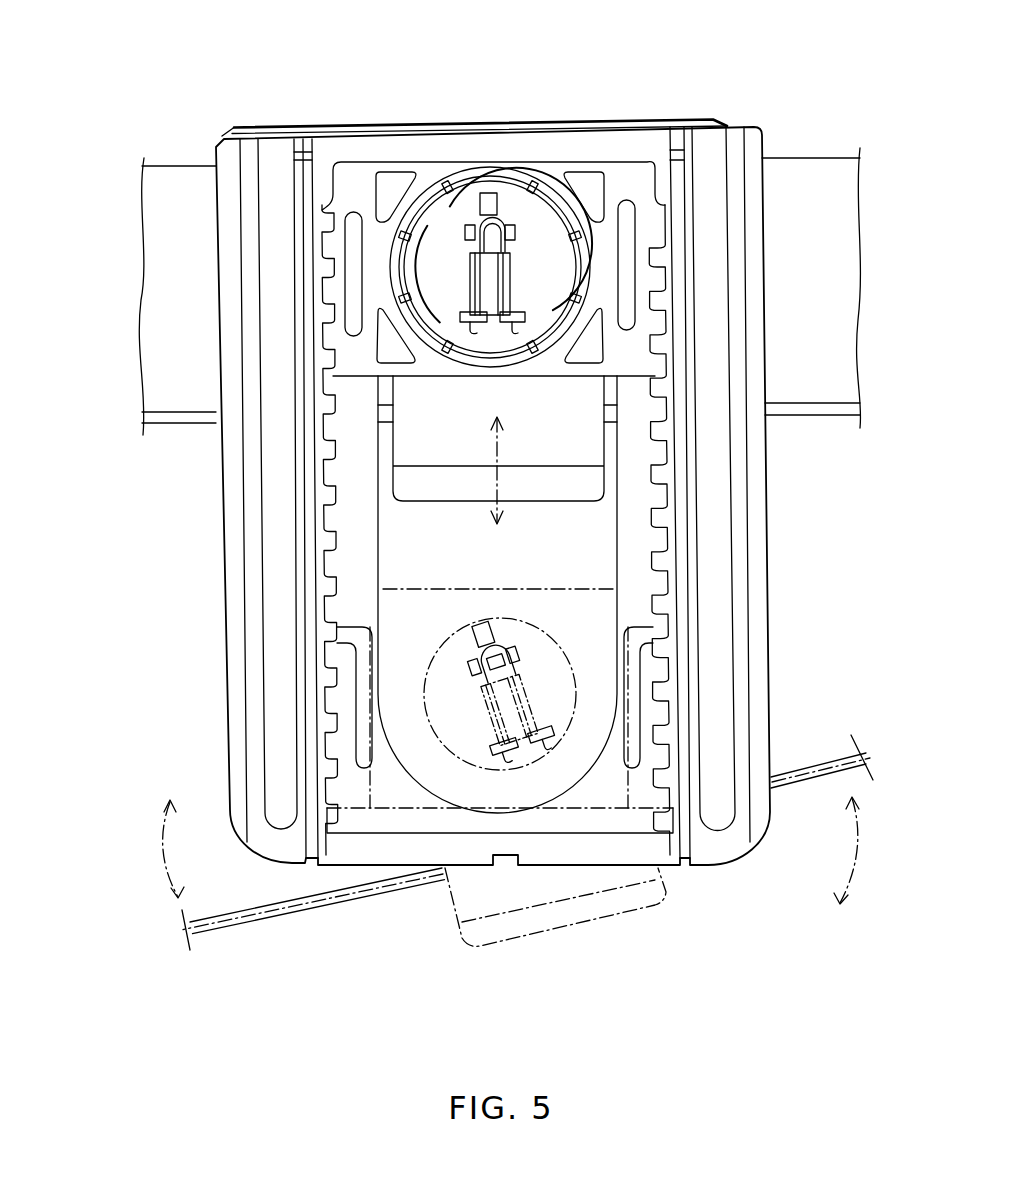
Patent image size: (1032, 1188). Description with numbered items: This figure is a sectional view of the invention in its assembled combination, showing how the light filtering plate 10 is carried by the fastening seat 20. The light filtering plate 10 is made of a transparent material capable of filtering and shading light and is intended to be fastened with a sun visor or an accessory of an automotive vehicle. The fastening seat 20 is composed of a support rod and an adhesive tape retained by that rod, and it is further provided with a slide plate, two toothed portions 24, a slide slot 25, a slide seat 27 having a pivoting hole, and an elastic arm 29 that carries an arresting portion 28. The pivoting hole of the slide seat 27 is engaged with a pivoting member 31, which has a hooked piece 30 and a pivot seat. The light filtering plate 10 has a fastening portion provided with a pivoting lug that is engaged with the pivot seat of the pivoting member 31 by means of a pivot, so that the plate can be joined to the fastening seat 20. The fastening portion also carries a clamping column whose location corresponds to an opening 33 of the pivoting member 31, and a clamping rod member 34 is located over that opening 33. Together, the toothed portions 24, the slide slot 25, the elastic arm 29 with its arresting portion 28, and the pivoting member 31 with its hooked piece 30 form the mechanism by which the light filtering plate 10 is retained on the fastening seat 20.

The light filtering plate 10 is at (838, 414).
The fastening seat 20 is at (760, 134).
The toothed portions 24 is at (660, 568).
The slide slot 25 is at (372, 560).
The slide seat 27 is at (361, 172).
The arresting portion 28 is at (338, 222).
The elastic arm 29 is at (342, 306).
The hooked piece 30 is at (563, 203).
The pivoting member 31 is at (418, 438).
The opening 33 is at (462, 275).
The clamping rod member 34 is at (512, 248).